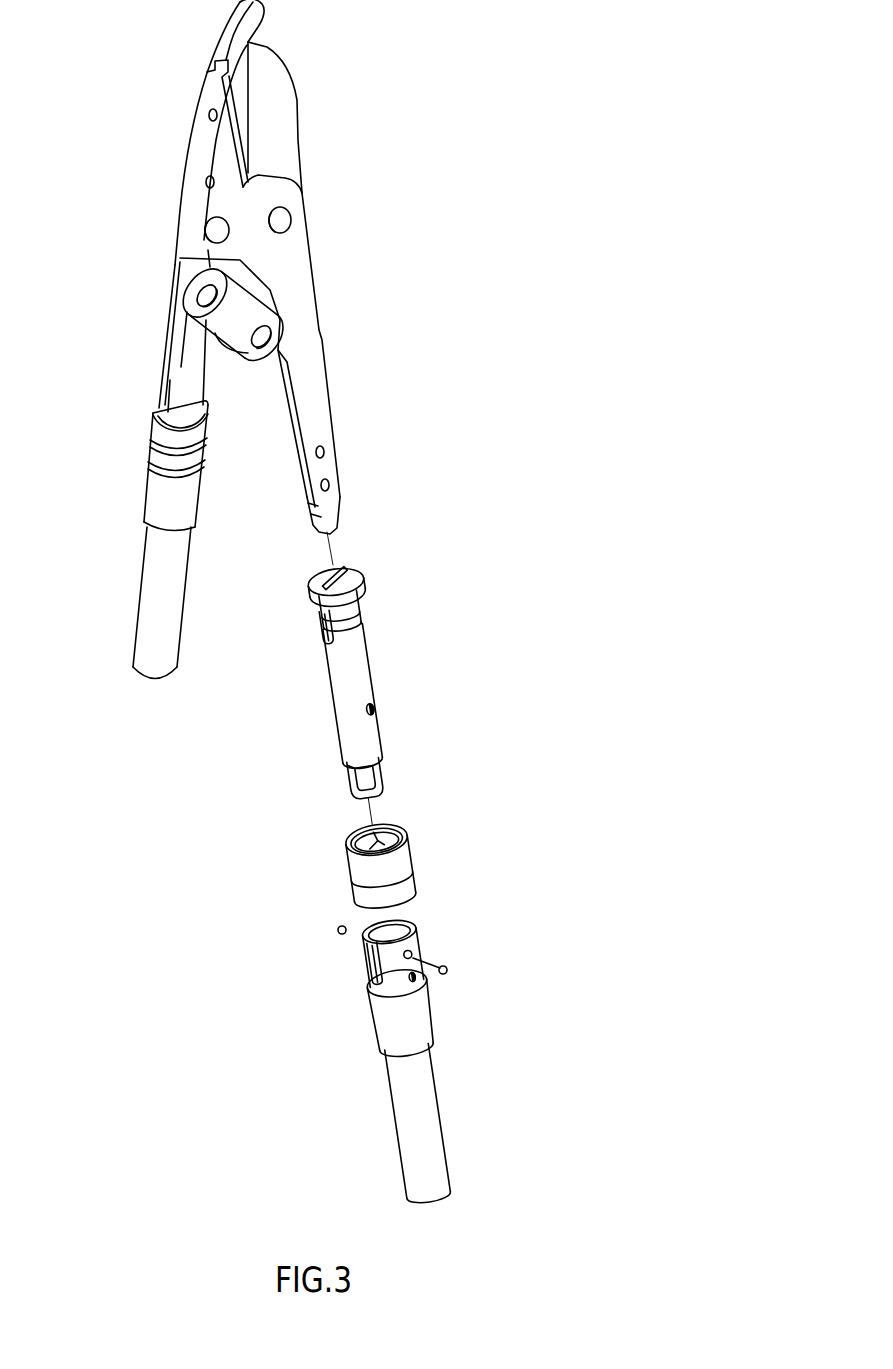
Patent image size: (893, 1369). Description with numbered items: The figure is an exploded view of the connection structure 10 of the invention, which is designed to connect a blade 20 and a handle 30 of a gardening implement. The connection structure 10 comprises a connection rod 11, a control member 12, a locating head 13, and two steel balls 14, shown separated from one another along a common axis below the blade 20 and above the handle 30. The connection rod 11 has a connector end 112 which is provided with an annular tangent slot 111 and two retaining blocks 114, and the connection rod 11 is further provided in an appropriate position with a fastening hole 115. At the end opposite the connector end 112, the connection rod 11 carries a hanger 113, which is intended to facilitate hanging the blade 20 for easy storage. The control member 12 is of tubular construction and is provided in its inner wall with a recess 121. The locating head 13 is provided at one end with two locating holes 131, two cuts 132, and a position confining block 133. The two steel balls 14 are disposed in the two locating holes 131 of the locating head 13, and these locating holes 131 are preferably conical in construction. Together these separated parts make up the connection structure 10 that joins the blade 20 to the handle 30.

The connection structure 10 is at (497, 726).
The connection rod 11 is at (340, 659).
The annular tangent slot 111 is at (367, 623).
The connector end 112 is at (348, 570).
The hanger 113 is at (347, 775).
The retaining blocks 114 is at (320, 620).
The fastening hole 115 is at (378, 713).
The control member 12 is at (410, 845).
The recess 121 is at (388, 826).
The locating head 13 is at (395, 1062).
The locating holes 131 is at (413, 948).
The cuts 132 is at (365, 980).
The position confining block 133 is at (425, 983).
The steel balls 14 is at (337, 932).
The blade 20 is at (190, 195).
The handle 30 is at (147, 620).